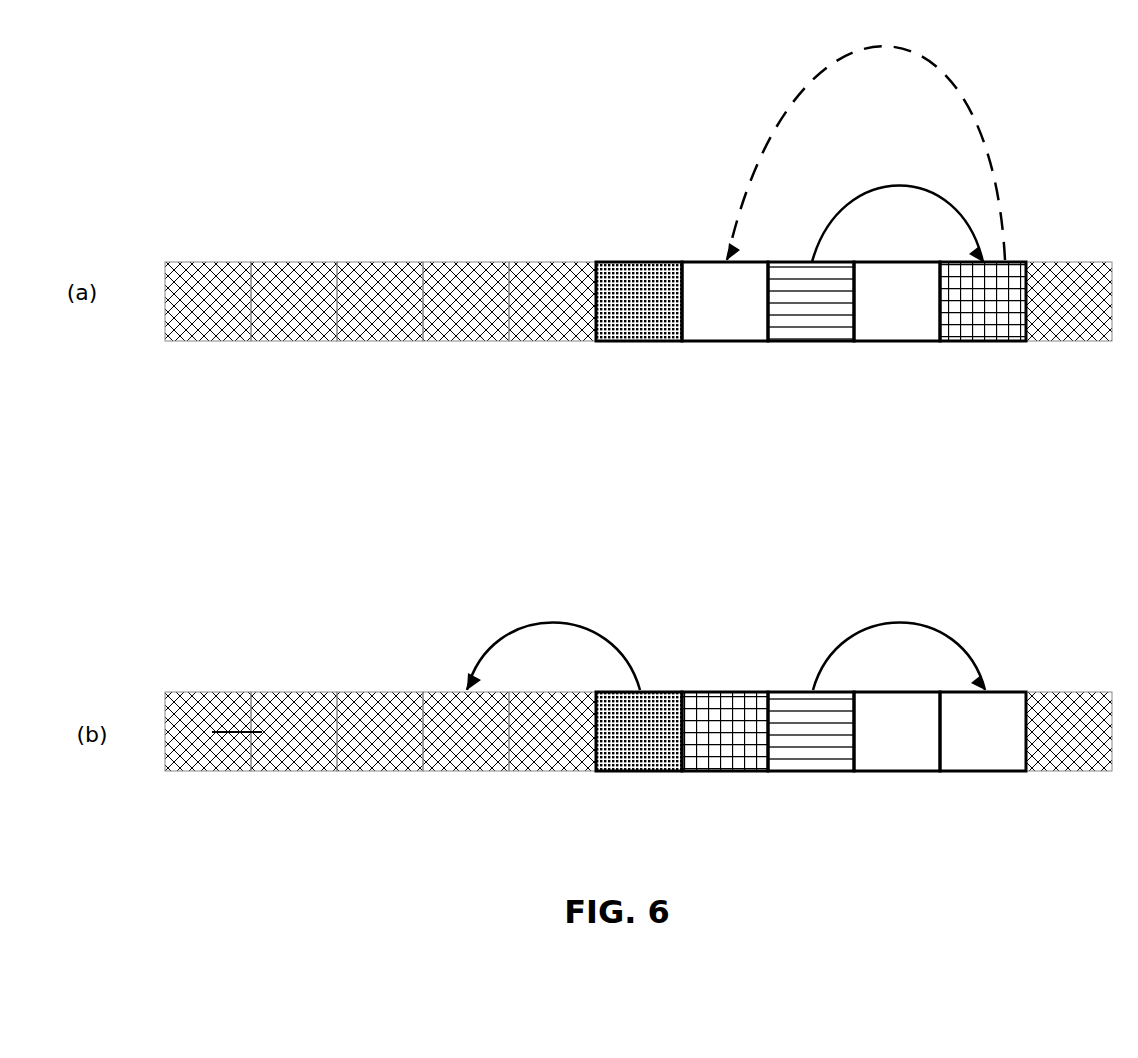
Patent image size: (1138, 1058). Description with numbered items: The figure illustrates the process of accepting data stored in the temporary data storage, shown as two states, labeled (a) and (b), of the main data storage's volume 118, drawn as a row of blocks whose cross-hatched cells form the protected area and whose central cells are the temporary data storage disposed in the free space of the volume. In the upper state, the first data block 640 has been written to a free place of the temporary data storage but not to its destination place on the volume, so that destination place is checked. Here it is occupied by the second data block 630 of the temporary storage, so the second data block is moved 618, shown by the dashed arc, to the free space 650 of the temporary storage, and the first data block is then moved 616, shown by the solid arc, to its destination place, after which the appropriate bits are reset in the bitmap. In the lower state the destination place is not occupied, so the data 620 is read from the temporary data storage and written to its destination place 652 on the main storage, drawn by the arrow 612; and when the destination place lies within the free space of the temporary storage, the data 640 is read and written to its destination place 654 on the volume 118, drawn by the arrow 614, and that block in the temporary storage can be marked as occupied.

The main data storage's volume 118 is at (155, 360).
The reference pointer 612 is at (553, 639).
The reference pointer 614 is at (899, 638).
The move of first data block to destination place 616 is at (897, 219).
The move of second data block to free space 618 is at (866, 149).
The data 620 is at (613, 341).
The second data block 630 is at (990, 341).
The first data block 640 is at (815, 341).
The free space of temporary storage 650 is at (723, 341).
The destination place 652 is at (457, 771).
The destination place 654 is at (985, 771).